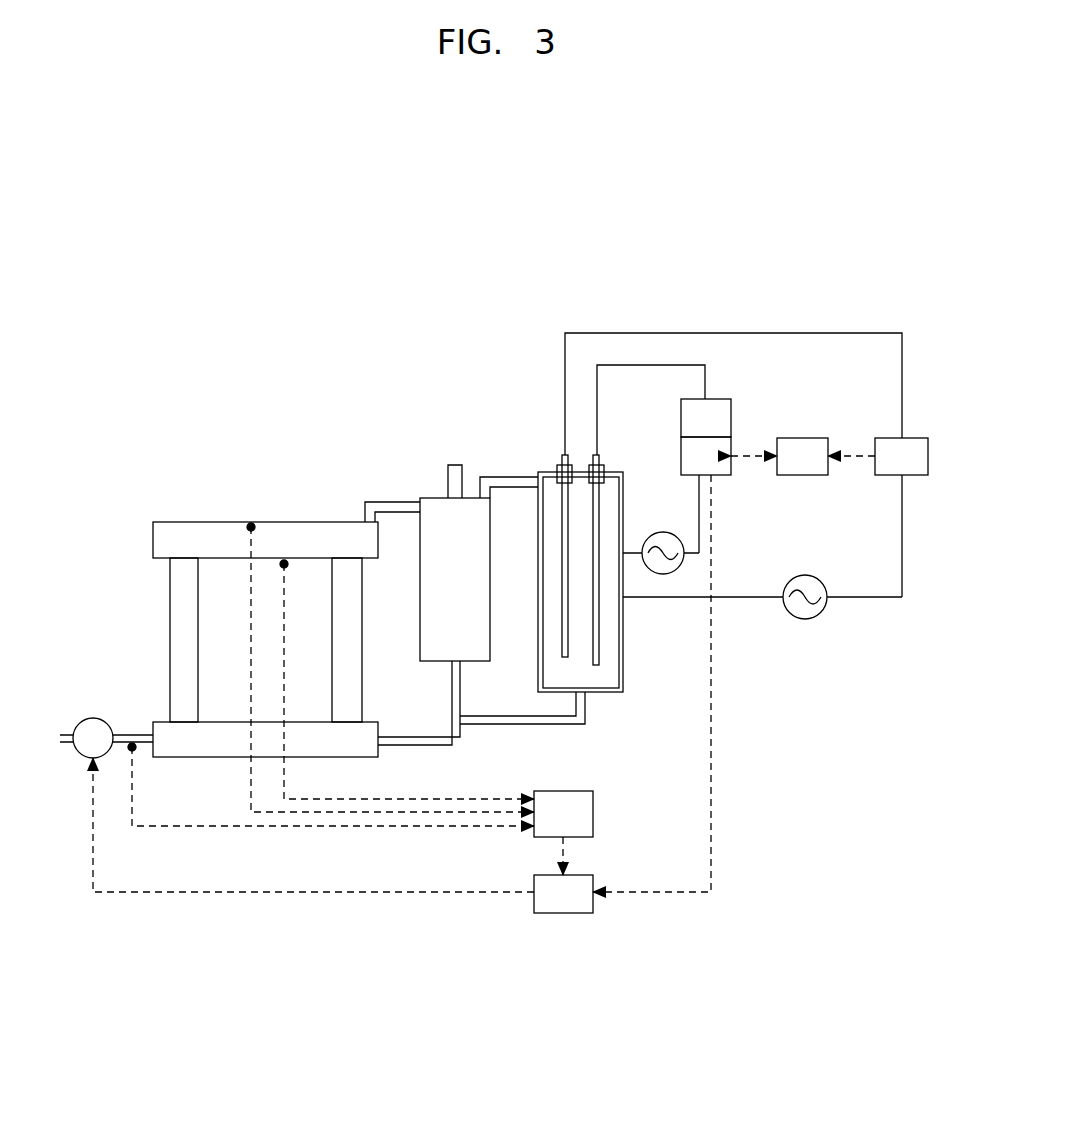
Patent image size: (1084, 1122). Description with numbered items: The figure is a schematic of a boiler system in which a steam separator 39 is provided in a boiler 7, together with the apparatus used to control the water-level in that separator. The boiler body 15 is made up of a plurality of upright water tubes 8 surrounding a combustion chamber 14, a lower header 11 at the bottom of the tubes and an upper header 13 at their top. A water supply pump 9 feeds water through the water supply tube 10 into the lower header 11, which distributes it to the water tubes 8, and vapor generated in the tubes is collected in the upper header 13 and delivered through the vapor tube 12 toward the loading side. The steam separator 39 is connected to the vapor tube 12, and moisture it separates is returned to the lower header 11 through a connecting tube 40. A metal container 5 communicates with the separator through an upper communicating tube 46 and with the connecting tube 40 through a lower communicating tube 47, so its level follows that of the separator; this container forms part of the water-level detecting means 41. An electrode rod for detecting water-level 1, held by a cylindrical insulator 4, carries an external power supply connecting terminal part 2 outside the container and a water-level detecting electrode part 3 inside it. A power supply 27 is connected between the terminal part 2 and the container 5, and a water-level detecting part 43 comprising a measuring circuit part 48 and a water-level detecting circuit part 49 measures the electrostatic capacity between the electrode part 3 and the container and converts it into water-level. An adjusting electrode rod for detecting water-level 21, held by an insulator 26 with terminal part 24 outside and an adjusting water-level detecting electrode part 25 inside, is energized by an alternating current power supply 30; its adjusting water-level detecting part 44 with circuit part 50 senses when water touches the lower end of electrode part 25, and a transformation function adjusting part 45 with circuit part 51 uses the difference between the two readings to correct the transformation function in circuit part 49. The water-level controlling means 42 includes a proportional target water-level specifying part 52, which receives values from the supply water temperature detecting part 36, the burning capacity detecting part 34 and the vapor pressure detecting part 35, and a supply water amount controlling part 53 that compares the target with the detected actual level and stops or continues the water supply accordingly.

The electrode rod for detecting water-level 1 is at (603, 503).
The external power supply connecting terminal part 2 is at (599, 460).
The water-level detecting electrode part 3 is at (598, 648).
The cylindrical insulator 4 is at (605, 470).
The container 5 is at (625, 619).
The boiler 7 is at (160, 582).
The water tubes 8 is at (182, 601).
The water supply pump 9 is at (93, 720).
The water supply tube 10 is at (128, 735).
The lower header 11 is at (215, 757).
The vapor tube 12 is at (370, 502).
The upper header 13 is at (178, 522).
The combustion chamber 14 is at (218, 672).
The boiler body 15 is at (168, 632).
The adjusting electrode rod for detecting water-level 21 is at (557, 531).
The external power supply connecting terminal part 24 is at (567, 462).
The adjusting water-level detecting electrode part 25 is at (562, 612).
The cylindrical insulator 26 is at (558, 447).
The power supply 27 is at (665, 532).
The power supply 30 is at (805, 575).
The burning capacity detecting part 34 is at (286, 567).
The vapor pressure detecting part 35 is at (251, 524).
The supply water temperature detecting part 36 is at (134, 750).
The steam separator 39 is at (437, 512).
The connecting tube 40 is at (456, 688).
The water-level detecting means 41 is at (539, 377).
The water-level controlling means 42 is at (595, 815).
The water-level detecting part 43 is at (717, 396).
The adjusting water-level detecting part 44 is at (912, 437).
The transformation function adjusting part 45 is at (797, 437).
The upper communicating tube 46 is at (498, 480).
The lower communicating tube 47 is at (508, 725).
The measuring circuit part 48 is at (720, 410).
The water-level detecting circuit part 49 is at (720, 447).
The adjusting water-level detecting circuit part 50 is at (893, 467).
The transformation function adjusting circuit part 51 is at (810, 447).
The proportional target water-level specifying part 52 is at (578, 800).
The supply water amount controlling part 53 is at (580, 883).